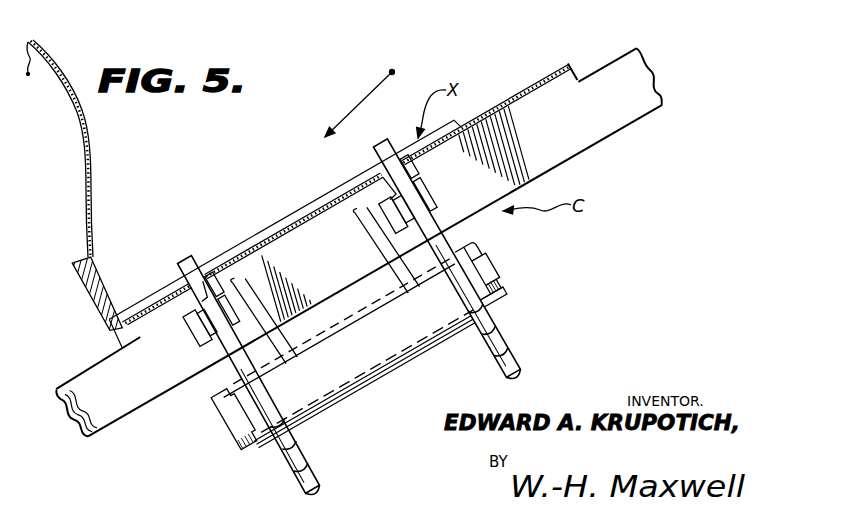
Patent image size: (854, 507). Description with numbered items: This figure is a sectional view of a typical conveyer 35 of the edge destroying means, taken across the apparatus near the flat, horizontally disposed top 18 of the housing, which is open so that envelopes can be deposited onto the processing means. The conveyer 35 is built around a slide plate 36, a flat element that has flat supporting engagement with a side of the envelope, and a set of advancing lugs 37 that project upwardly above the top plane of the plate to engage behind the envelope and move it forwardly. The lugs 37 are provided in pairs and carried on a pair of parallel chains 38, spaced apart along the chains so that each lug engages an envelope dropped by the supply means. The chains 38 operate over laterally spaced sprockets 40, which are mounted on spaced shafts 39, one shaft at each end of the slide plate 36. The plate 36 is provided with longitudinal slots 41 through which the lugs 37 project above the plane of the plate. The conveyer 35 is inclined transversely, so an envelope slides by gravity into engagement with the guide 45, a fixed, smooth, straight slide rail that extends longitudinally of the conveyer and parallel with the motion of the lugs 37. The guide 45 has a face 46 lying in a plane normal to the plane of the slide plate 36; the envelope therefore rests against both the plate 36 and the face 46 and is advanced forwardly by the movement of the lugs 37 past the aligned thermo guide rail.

The top 18 is at (40, 46).
The conveyer 35 is at (500, 330).
The slide plate 36 is at (506, 98).
The advancing lug 37 is at (382, 144).
The chain 38 is at (427, 204).
The shaft 39 is at (500, 274).
The sprocket 40 is at (514, 368).
The longitudinal slot 41 is at (404, 178).
The guide 45 is at (110, 284).
The face 46 is at (116, 305).